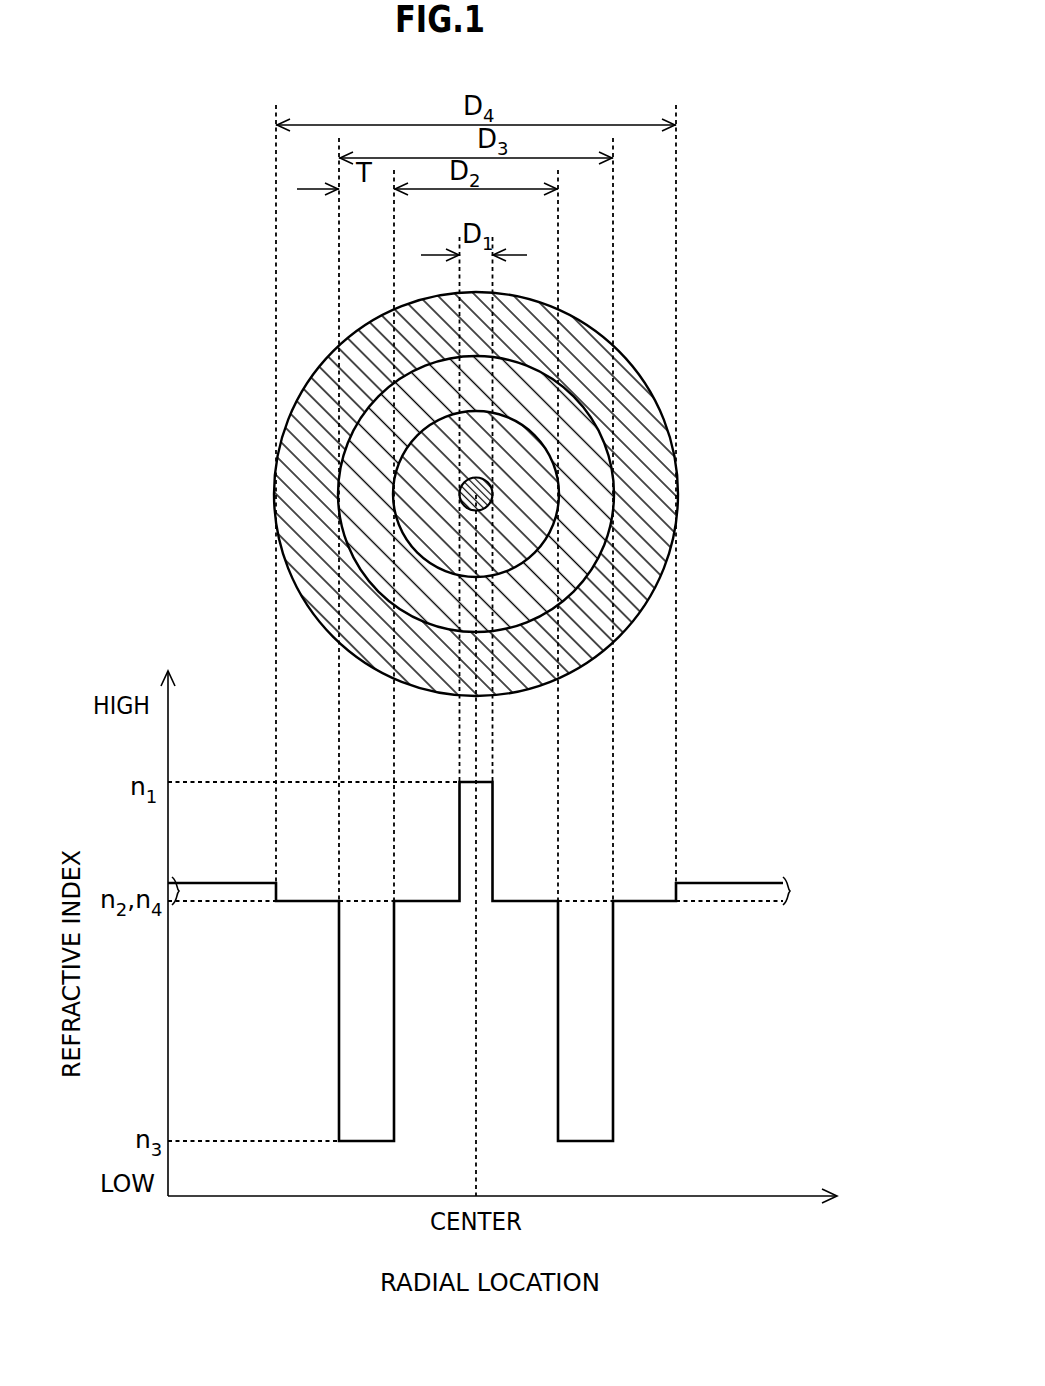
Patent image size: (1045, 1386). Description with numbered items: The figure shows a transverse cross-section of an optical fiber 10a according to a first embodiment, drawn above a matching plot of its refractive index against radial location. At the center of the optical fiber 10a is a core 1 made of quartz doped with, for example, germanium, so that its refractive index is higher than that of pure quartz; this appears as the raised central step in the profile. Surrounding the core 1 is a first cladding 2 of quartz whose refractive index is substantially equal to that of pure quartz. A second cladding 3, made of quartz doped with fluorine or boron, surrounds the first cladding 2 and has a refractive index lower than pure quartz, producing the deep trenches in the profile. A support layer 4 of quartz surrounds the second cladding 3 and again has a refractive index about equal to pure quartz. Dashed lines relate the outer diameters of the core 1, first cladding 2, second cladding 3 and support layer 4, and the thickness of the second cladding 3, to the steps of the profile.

The optical fiber 10a is at (227, 365).
The core 1 is at (490, 483).
The first cladding 2 is at (520, 416).
The second cladding 3 is at (595, 542).
The support layer 4 is at (640, 590).